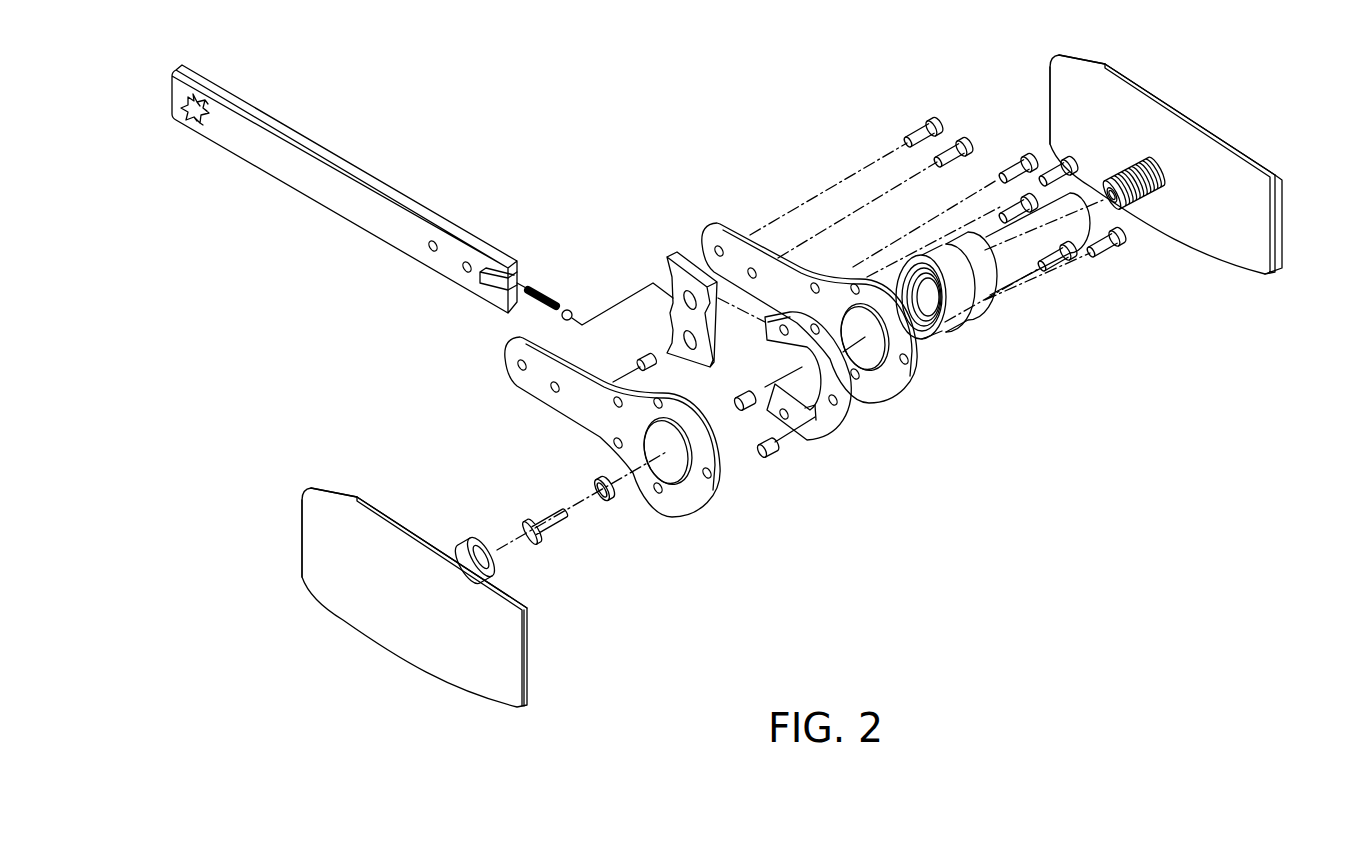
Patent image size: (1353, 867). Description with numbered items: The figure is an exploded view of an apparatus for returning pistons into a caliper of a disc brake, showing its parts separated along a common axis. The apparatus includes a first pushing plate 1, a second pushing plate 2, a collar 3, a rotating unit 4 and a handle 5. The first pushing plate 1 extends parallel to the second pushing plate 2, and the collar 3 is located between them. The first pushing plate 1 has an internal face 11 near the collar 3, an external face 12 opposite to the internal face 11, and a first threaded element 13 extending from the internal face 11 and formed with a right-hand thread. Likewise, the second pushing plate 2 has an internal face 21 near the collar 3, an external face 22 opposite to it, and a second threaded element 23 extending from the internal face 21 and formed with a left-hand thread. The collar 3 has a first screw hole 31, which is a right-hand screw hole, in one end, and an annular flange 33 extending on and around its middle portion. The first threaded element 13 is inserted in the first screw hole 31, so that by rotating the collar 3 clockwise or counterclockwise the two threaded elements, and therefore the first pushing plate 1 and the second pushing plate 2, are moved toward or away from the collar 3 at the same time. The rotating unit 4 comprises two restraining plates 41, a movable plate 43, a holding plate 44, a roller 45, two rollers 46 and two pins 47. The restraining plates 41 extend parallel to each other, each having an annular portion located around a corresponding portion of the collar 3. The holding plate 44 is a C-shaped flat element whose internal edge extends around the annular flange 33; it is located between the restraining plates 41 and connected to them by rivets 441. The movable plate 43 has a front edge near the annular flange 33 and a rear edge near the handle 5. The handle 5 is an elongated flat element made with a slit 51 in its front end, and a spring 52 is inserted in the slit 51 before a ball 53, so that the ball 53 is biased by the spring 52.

The first pushing plate 1 is at (312, 617).
The internal face 11 is at (352, 492).
The external face 12 is at (312, 553).
The first threaded element 13 is at (463, 540).
The second pushing plate 2 is at (1213, 110).
The internal face 21 is at (1058, 83).
The external face 22 is at (1147, 82).
The second threaded element 23 is at (1147, 195).
The collar 3 is at (993, 305).
The first screw hole 31 is at (935, 340).
The annular flange 33 is at (977, 313).
The rotating unit 4 is at (883, 497).
The restraining plates 41 is at (675, 517).
The movable plate 43 is at (677, 253).
The holding plate 44 is at (848, 430).
The rivets 441 is at (1107, 253).
The roller 45 is at (643, 357).
The rollers 46 is at (743, 413).
The pins 47 is at (1027, 163).
The handle 5 is at (362, 160).
The slit 51 is at (492, 280).
The spring 52 is at (535, 290).
The ball 53 is at (567, 310).